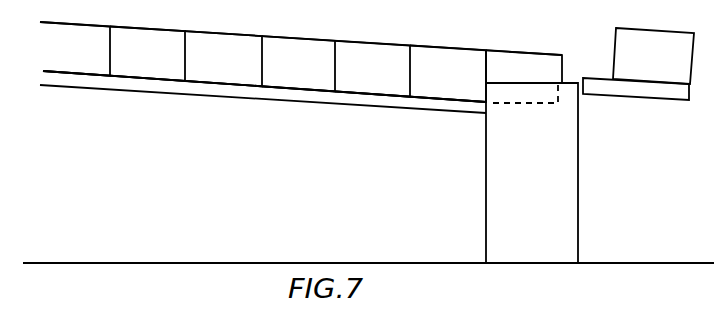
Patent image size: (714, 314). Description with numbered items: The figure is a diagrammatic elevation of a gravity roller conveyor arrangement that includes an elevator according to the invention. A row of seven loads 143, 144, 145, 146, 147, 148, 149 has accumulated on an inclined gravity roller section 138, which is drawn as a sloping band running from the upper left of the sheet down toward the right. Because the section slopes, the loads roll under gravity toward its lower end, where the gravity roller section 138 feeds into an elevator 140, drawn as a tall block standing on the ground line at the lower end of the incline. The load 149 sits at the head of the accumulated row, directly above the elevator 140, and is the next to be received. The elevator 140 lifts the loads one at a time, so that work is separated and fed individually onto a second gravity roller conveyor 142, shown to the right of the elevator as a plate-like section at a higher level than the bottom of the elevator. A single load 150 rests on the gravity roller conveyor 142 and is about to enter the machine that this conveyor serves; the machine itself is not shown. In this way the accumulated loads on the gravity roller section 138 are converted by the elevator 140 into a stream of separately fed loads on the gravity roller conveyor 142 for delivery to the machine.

The gravity roller section 138 is at (122, 85).
The elevator 140 is at (547, 180).
The gravity roller conveyor 142 is at (637, 90).
The load 143 is at (88, 64).
The load 144 is at (163, 68).
The load 145 is at (242, 74).
The load 146 is at (316, 80).
The load 147 is at (393, 82).
The load 148 is at (463, 88).
The load 149 is at (543, 80).
The load 150 is at (675, 70).